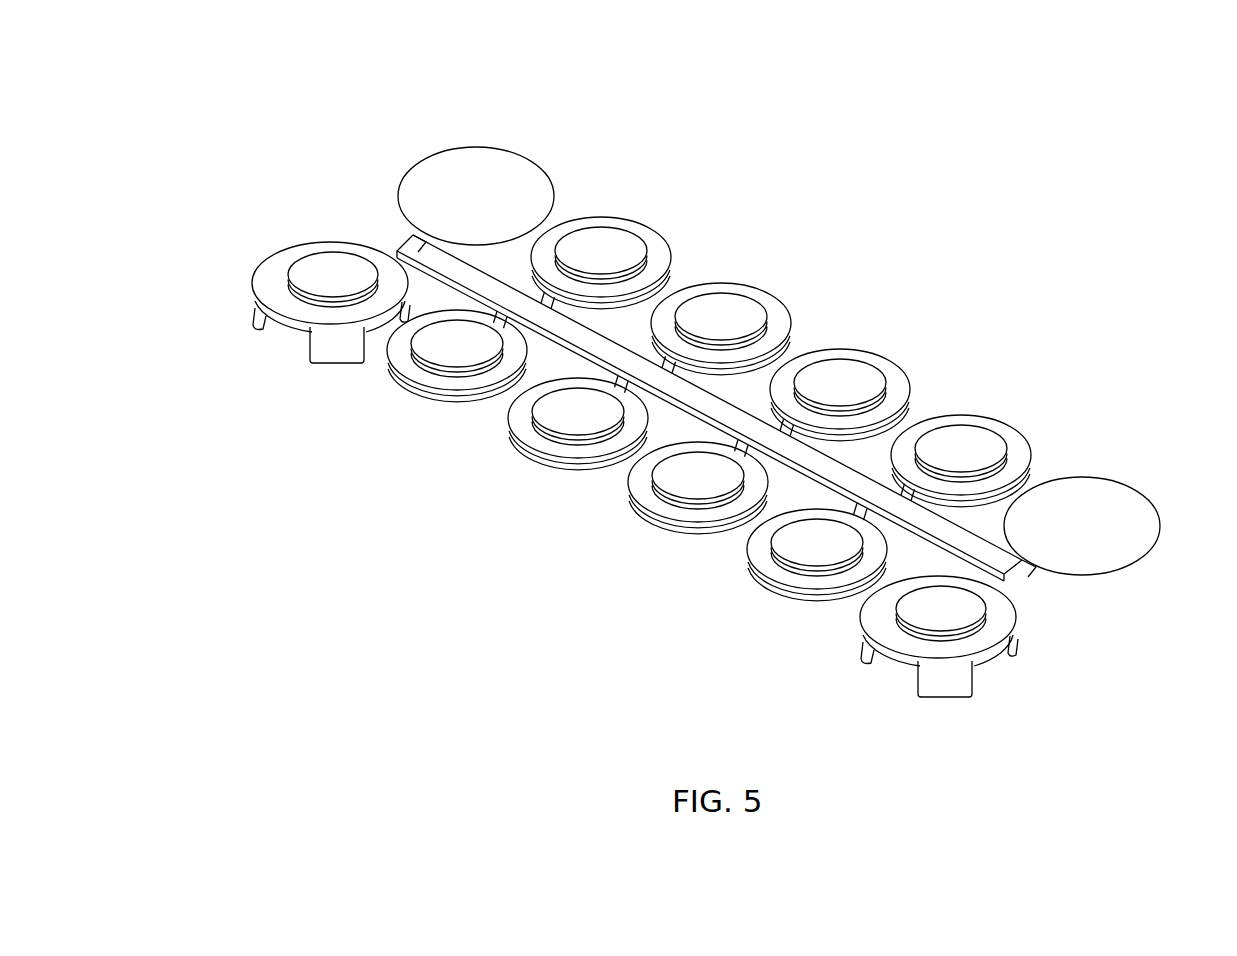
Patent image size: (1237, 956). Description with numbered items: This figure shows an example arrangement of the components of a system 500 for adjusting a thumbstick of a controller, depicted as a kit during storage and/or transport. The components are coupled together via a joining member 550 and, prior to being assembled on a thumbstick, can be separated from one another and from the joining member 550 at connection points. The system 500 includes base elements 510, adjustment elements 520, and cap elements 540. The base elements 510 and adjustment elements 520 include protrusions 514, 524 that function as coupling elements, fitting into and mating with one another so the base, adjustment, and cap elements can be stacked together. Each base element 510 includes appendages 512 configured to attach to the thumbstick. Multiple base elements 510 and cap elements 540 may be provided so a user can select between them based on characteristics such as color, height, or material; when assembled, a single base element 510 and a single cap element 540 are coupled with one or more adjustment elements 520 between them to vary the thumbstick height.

The system 500 is at (280, 108).
The base element 510 is at (285, 298).
The appendage 512 is at (325, 352).
The protrusion 514 is at (308, 270).
The adjustment element 520 is at (565, 447).
The protrusion 524 is at (573, 407).
The cap element 540 is at (525, 185).
The joining member 550 is at (997, 563).